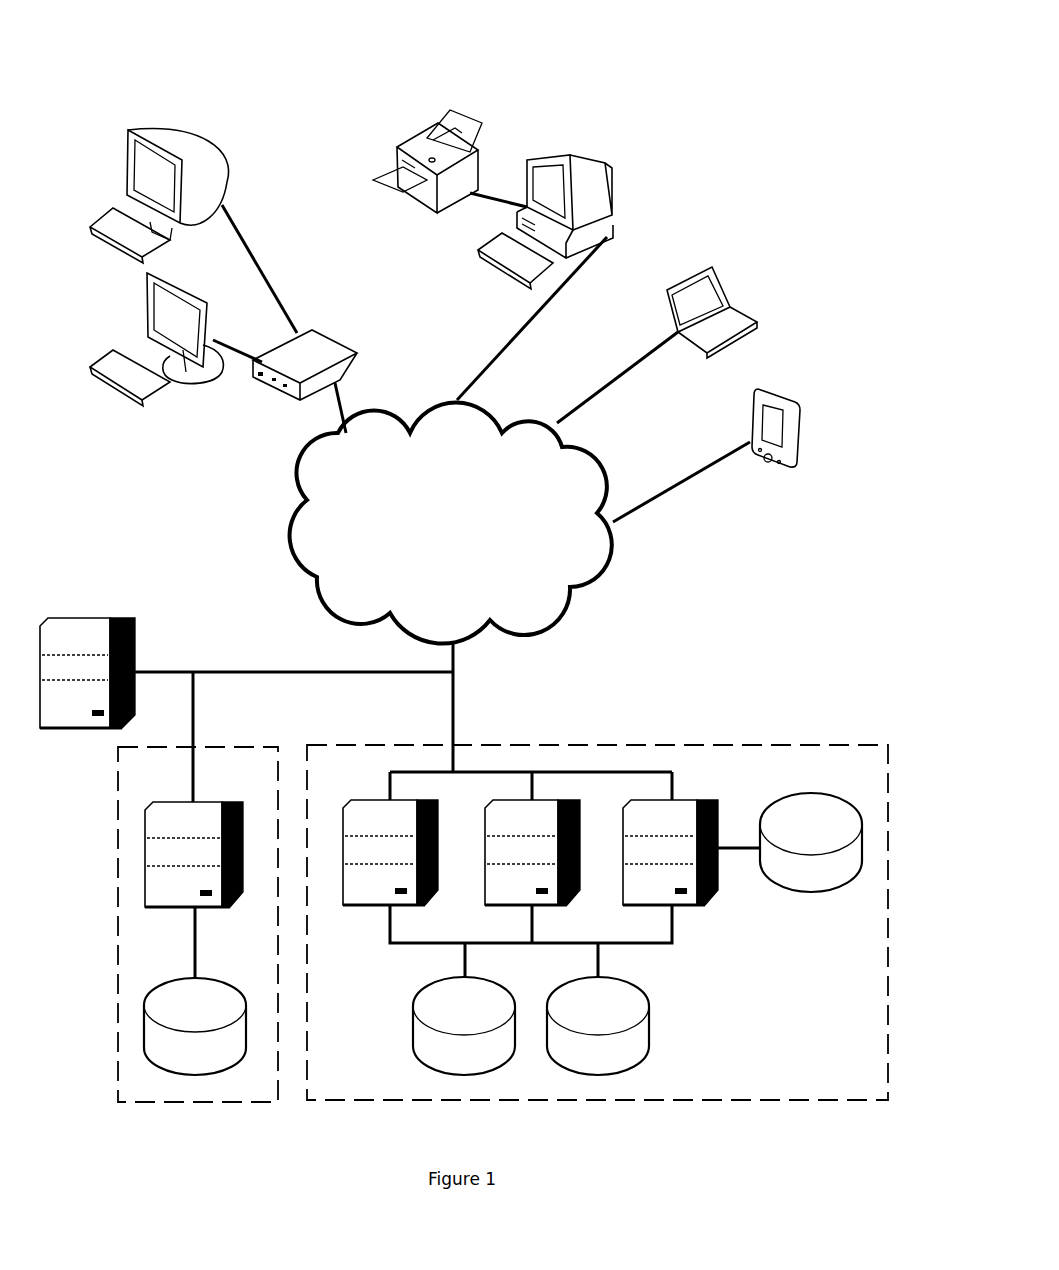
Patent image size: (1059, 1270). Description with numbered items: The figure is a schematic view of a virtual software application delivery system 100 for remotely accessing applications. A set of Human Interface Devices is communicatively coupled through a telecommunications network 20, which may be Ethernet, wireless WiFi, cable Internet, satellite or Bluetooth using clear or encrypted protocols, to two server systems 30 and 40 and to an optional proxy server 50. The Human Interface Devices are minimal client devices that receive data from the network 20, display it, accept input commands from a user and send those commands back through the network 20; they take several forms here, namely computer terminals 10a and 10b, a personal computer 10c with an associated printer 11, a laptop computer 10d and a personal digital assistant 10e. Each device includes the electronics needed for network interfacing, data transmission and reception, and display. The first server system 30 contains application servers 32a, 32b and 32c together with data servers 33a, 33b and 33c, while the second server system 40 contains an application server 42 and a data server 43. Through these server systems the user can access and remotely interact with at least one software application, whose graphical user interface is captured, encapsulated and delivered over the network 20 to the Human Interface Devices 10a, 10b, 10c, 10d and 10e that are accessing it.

The virtual software application delivery system 100 is at (647, 70).
The computer terminal 10a is at (147, 297).
The computer terminal 10b is at (170, 130).
The personal computer 10c is at (580, 160).
The laptop computer 10d is at (733, 305).
The personal digital assistant 10e is at (803, 427).
The printer 11 is at (475, 152).
The telecommunications network 20 is at (603, 583).
The server system 30 is at (652, 745).
The application server 32a is at (427, 818).
The application server 32b is at (567, 818).
The application server 32c is at (700, 799).
The data server 33a is at (497, 983).
The data server 33b is at (630, 983).
The data server 33c is at (815, 793).
The server system 40 is at (233, 746).
The application server 42 is at (210, 801).
The data server 43 is at (213, 979).
The proxy server 50 is at (87, 617).